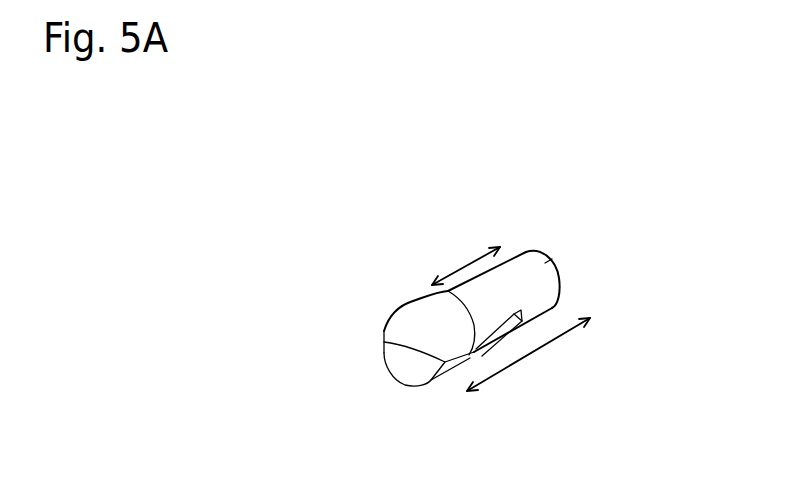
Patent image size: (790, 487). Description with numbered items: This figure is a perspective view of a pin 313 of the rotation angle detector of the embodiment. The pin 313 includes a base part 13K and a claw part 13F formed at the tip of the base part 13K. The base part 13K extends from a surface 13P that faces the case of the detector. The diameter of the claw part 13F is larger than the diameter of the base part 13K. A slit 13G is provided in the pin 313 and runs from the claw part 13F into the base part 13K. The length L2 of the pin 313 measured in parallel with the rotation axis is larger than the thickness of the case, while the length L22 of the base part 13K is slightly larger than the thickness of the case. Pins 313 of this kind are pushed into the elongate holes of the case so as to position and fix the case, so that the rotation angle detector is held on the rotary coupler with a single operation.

The base part 13K is at (533, 288).
The surface 13P is at (538, 238).
The pin 313 is at (545, 263).
The slit 13G is at (498, 332).
The claw part 13F is at (421, 313).
The length of base part L22 is at (445, 273).
The length of pin L2 is at (532, 352).